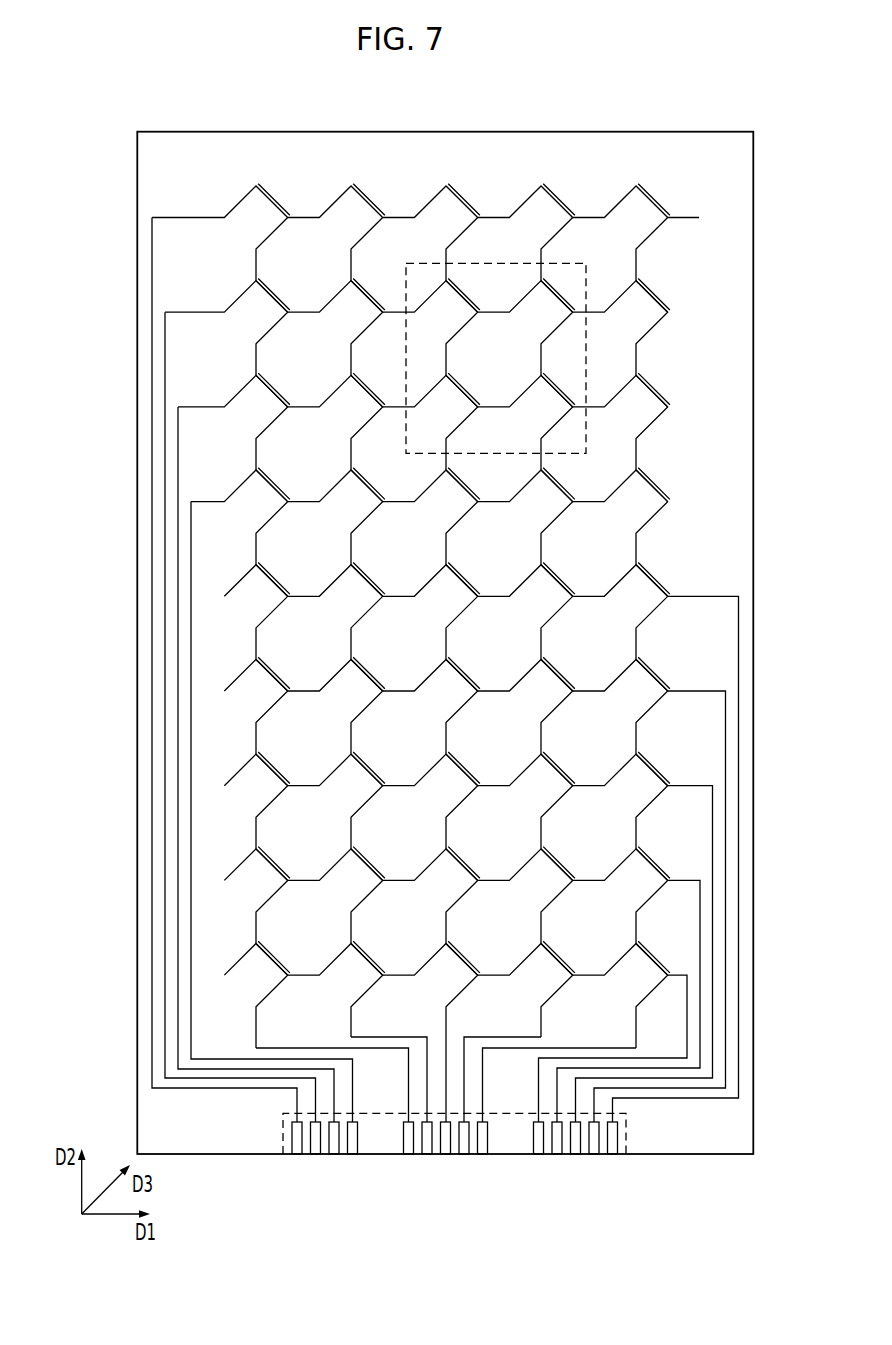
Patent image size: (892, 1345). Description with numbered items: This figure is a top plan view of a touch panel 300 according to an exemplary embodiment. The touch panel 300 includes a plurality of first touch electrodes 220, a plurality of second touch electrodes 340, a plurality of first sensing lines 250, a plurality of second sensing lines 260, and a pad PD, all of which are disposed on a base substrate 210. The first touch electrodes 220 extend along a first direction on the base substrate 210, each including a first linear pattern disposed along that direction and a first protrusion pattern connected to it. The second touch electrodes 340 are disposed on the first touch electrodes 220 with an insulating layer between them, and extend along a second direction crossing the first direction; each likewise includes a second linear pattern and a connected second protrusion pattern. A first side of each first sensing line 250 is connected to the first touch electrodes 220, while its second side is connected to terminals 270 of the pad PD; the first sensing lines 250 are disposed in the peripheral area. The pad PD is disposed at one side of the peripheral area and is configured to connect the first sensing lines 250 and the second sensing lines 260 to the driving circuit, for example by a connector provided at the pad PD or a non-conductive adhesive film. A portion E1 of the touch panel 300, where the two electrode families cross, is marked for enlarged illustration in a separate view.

The touch panel 300 is at (445, 600).
The base substrate 210 is at (648, 147).
The first touch electrodes 220 is at (302, 217).
The first sensing lines 250 is at (152, 275).
The second touch electrodes 340 is at (636, 264).
The second sensing lines 260 is at (713, 843).
The terminals 270 is at (481, 1155).
The pad PD is at (626, 1133).
The portion E1 is at (487, 262).